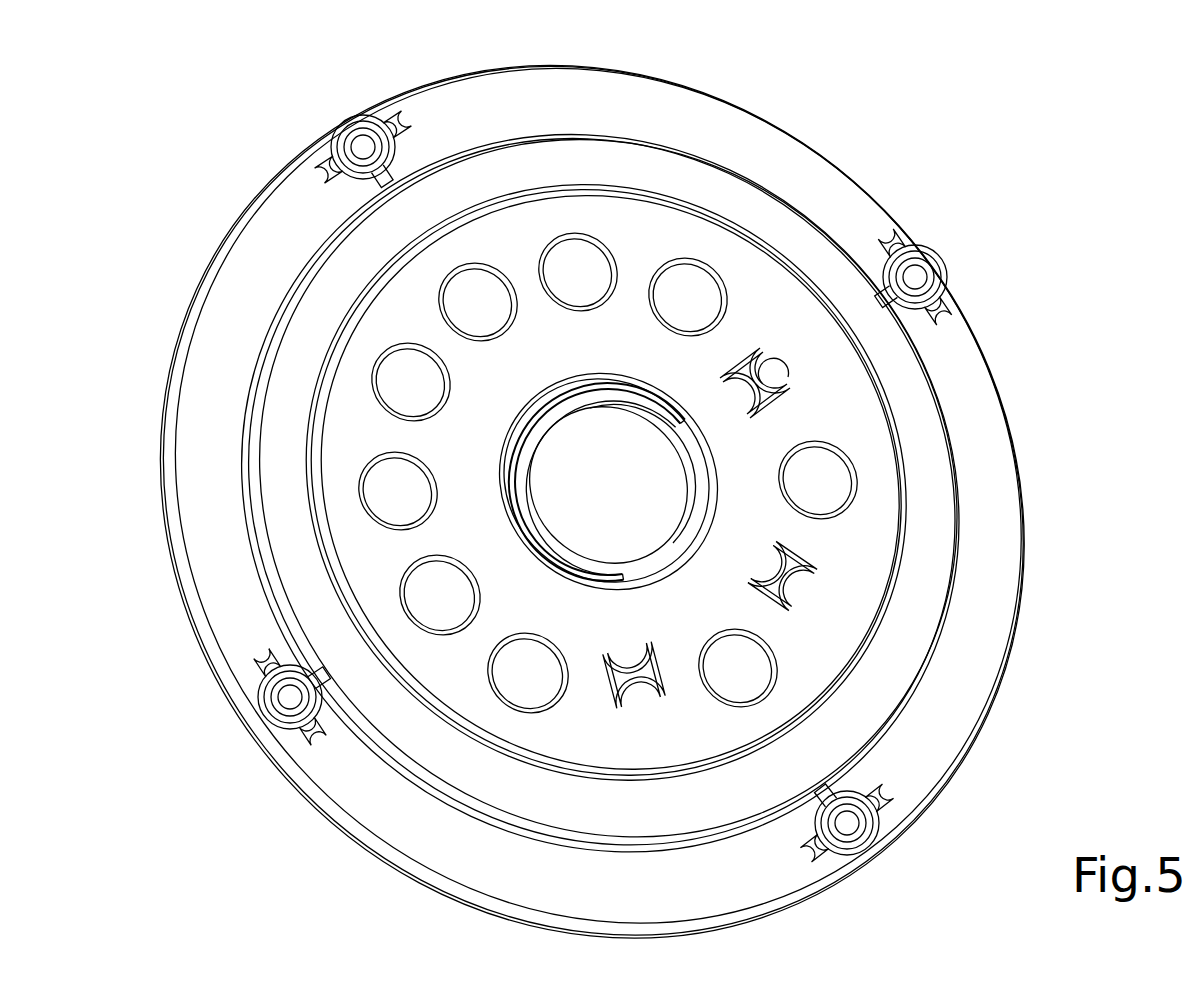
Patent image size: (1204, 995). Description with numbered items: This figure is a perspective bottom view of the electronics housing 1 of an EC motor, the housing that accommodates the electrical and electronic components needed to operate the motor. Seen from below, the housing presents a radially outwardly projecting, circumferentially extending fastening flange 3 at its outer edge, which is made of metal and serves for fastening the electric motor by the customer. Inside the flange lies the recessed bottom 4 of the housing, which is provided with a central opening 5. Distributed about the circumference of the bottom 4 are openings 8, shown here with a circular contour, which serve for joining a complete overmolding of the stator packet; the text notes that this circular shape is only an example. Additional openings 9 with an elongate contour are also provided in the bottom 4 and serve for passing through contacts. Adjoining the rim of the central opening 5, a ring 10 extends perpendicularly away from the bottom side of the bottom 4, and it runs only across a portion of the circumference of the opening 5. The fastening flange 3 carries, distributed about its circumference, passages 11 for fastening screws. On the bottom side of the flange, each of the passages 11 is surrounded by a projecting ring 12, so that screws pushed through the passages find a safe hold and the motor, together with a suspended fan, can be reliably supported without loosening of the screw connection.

The electronics housing 1 is at (900, 210).
The fastening flange 3 is at (982, 640).
The bottom 4 is at (873, 527).
The central opening 5 is at (640, 507).
The openings 8 is at (587, 292).
The additional openings 9 is at (745, 402).
The ring 10 is at (616, 385).
The passages 11 is at (358, 150).
The projecting ring 12 is at (397, 153).